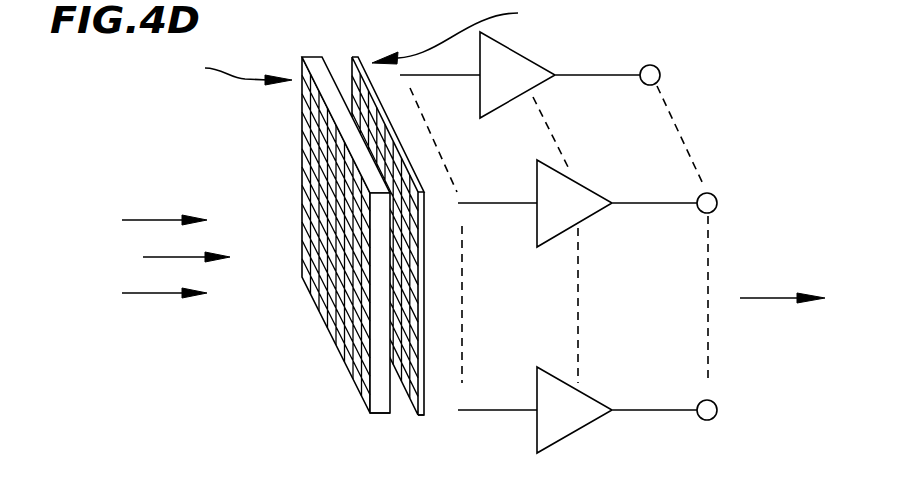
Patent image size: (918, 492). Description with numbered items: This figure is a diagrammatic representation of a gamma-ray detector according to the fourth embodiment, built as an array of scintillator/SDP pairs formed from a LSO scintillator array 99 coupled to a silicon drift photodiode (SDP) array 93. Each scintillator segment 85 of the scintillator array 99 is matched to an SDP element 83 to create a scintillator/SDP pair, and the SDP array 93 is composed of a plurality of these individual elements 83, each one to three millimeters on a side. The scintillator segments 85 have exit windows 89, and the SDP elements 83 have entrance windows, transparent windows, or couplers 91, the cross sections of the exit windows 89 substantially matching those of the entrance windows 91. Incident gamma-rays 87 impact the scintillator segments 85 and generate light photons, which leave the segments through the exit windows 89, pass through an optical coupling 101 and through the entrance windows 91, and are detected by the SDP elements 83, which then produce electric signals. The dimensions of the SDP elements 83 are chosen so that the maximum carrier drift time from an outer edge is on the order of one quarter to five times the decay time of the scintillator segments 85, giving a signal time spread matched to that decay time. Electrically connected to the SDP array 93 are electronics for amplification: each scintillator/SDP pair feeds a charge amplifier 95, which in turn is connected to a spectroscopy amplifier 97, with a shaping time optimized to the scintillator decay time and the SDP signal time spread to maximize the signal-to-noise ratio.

The SDP element 83 is at (422, 413).
The scintillator segment 85 is at (365, 398).
The incident gamma-rays 87 is at (160, 257).
The exit window 89 is at (397, 413).
The entrance window 91 is at (413, 394).
The SDP array 93 is at (466, 32).
The charge amplifier 95 is at (575, 192).
The spectroscopy amplifier 97 is at (768, 298).
The LSO scintillator array 99 is at (229, 69).
The optical coupling 101 is at (337, 58).